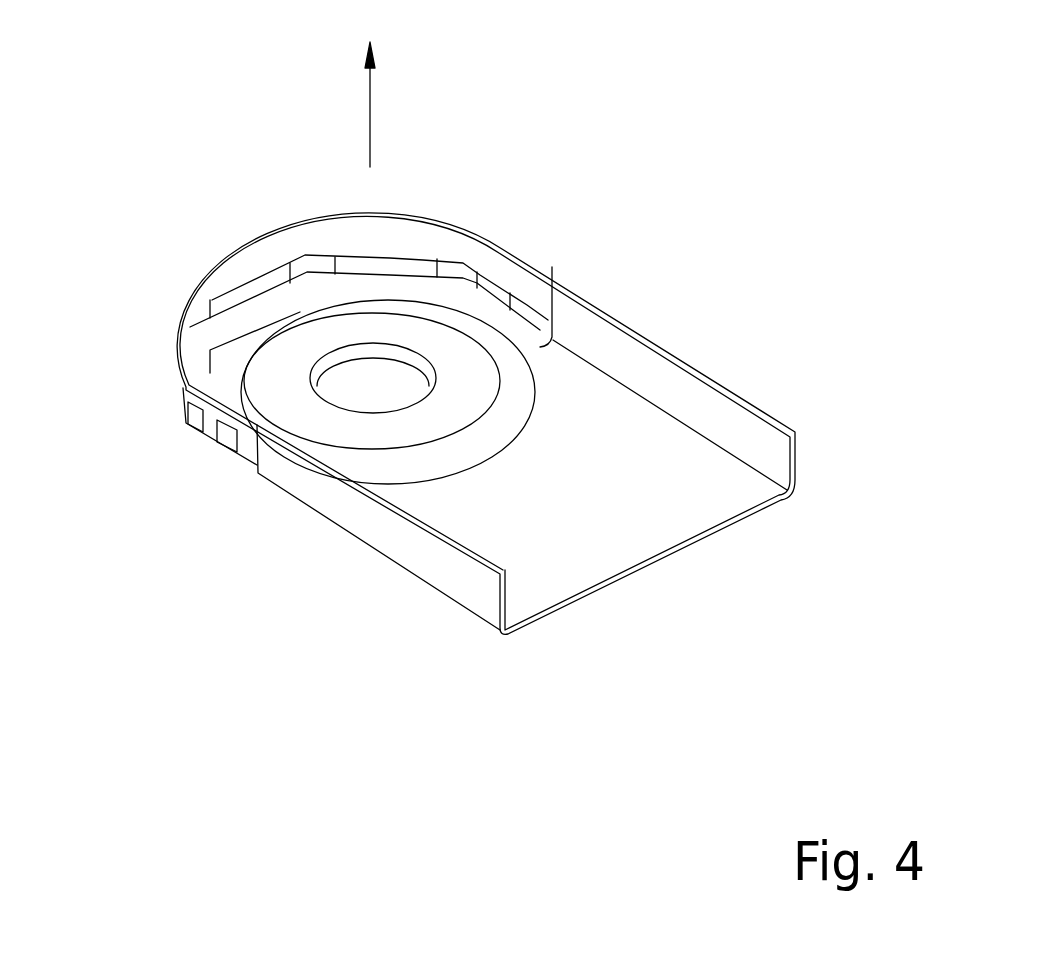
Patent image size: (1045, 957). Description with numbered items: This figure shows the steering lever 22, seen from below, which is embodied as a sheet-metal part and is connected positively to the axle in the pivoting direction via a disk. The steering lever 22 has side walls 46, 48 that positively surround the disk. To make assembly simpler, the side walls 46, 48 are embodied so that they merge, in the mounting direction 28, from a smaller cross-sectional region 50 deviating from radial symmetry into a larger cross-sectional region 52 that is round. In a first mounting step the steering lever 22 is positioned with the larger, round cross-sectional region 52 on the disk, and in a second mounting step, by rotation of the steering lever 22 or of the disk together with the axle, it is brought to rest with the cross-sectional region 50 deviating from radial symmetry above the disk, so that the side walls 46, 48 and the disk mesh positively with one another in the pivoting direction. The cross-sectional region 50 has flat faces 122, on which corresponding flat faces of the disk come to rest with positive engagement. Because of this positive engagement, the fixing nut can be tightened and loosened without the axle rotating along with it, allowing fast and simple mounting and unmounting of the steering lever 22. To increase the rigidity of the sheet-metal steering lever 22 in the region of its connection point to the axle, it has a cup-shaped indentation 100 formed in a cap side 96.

The steering lever 22 is at (478, 582).
The mounting direction 28 is at (370, 115).
The side wall 46 is at (405, 545).
The side wall 48 is at (730, 413).
The smaller cross-sectional region 50 is at (540, 308).
The larger cross-sectional region 52 is at (497, 253).
The cap side 96 is at (547, 565).
The cup-shaped indentation 100 is at (503, 413).
The flat faces 122 is at (463, 263).